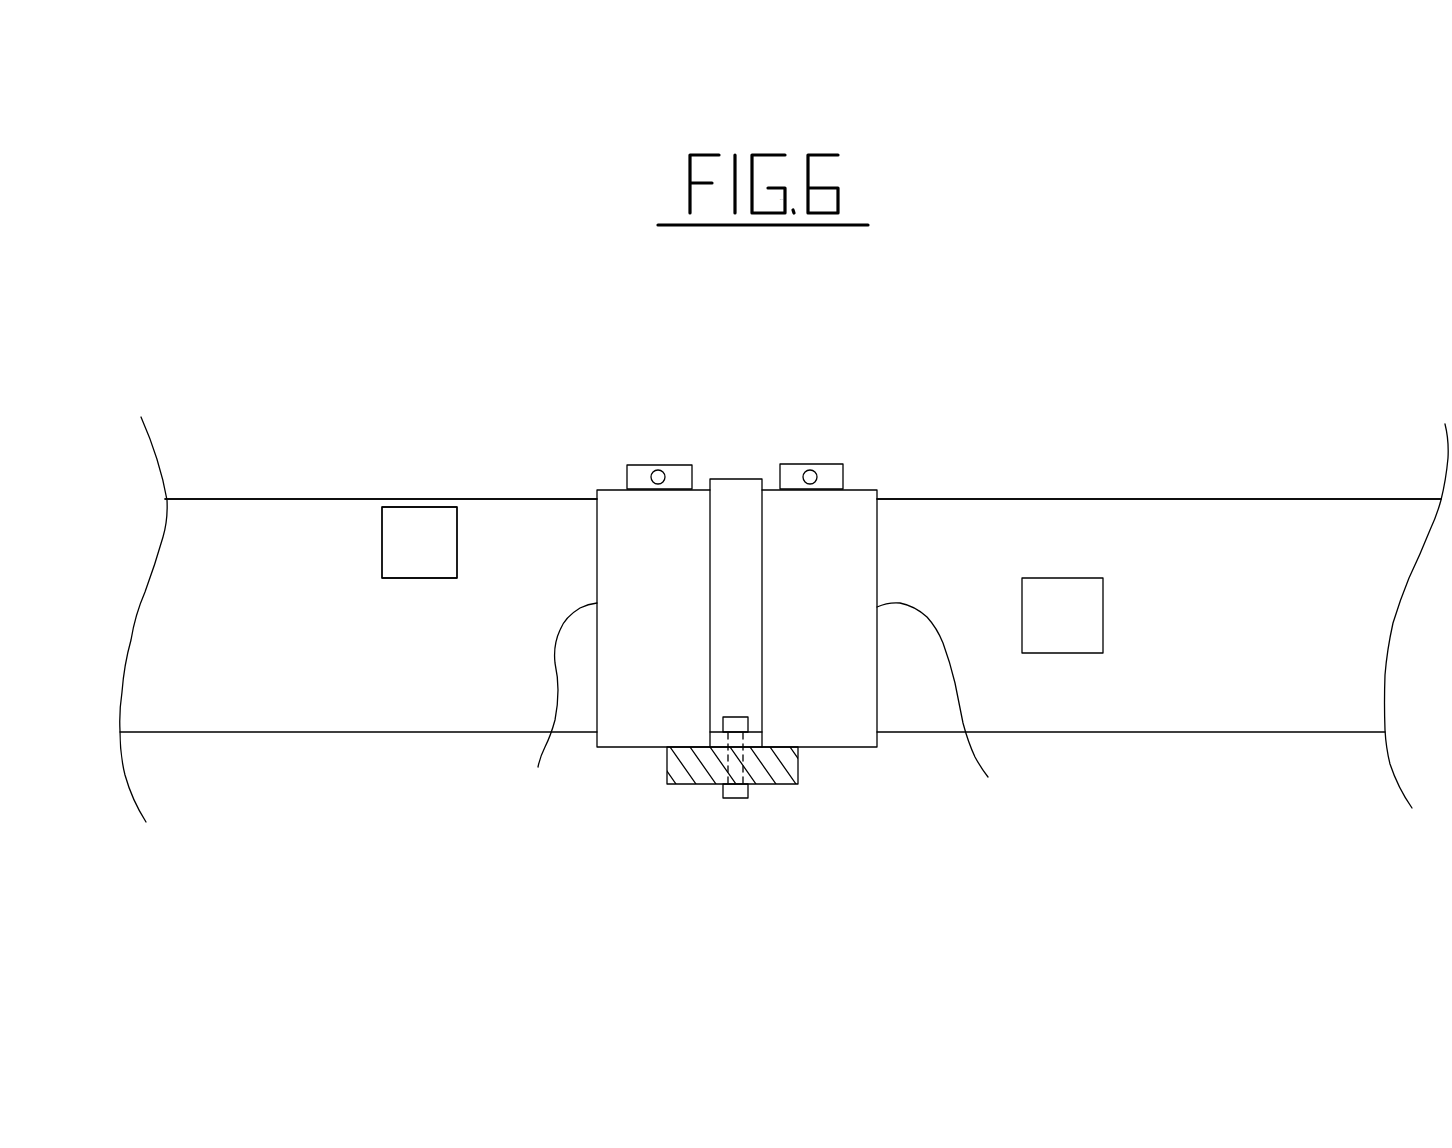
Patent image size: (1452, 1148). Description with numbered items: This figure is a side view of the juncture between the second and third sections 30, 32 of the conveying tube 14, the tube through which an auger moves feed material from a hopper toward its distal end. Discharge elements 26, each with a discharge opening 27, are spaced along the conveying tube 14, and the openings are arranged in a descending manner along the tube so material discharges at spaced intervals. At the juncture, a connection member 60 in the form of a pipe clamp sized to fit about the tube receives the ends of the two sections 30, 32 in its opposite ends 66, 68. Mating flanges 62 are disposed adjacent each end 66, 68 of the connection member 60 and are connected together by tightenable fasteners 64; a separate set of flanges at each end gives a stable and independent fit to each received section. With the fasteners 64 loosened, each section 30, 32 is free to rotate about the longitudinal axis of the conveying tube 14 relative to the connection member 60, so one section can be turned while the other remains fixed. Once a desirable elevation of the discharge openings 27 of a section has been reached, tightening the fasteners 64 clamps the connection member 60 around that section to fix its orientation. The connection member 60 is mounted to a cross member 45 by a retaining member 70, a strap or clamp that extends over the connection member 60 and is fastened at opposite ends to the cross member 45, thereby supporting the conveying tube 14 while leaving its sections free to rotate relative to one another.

The conveying tube 14 is at (1130, 496).
The discharge element 26 is at (372, 528).
The discharge opening 27 is at (410, 537).
The second section 30 is at (518, 540).
The third section 32 is at (980, 538).
The cross member 45 is at (787, 766).
The connection member 60 is at (856, 516).
The mating flanges 62 is at (683, 466).
The tightenable fasteners 64 is at (658, 470).
The first end of connection member 66 is at (547, 718).
The second end of connection member 68 is at (962, 709).
The retaining member 70 is at (725, 647).